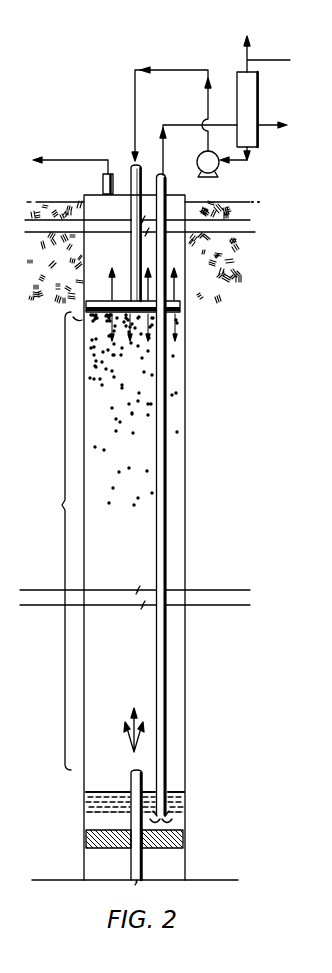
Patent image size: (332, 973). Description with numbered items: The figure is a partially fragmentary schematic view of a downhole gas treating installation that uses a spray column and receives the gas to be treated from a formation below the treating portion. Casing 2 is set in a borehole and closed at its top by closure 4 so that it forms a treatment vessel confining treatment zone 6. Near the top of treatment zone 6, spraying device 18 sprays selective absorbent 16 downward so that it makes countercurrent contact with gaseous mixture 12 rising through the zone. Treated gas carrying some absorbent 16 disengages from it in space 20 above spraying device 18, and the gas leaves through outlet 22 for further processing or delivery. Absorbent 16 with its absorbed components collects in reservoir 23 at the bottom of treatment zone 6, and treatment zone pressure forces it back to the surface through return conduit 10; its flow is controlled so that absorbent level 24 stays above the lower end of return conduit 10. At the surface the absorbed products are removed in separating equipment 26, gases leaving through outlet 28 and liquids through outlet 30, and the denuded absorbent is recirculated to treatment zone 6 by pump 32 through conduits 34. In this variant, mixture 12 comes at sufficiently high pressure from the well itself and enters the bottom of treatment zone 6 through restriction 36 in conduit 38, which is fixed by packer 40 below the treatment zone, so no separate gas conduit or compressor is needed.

The casing 2 is at (187, 400).
The closure 4 is at (138, 195).
The treatment zone 6 is at (62, 541).
The return conduit 10 is at (162, 648).
The gaseous mixture 12 is at (135, 720).
The selective absorbent 16 is at (95, 353).
The spraying device 18 is at (182, 308).
The space 20 is at (90, 275).
The outlet 22 is at (103, 180).
The reservoir 23 is at (118, 832).
The absorbent level 24 is at (170, 791).
The separating equipment 26 is at (254, 109).
The outlet 28 is at (276, 54).
The outlet 30 is at (267, 122).
The pump 32 is at (221, 169).
The conduits 34 is at (165, 70).
The restriction 36 is at (133, 770).
The conduit 38 is at (95, 868).
The packer 40 is at (186, 848).